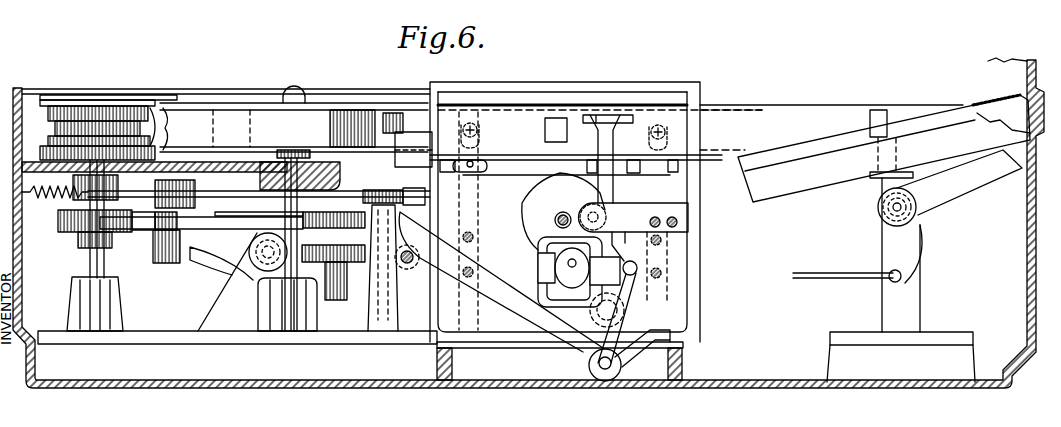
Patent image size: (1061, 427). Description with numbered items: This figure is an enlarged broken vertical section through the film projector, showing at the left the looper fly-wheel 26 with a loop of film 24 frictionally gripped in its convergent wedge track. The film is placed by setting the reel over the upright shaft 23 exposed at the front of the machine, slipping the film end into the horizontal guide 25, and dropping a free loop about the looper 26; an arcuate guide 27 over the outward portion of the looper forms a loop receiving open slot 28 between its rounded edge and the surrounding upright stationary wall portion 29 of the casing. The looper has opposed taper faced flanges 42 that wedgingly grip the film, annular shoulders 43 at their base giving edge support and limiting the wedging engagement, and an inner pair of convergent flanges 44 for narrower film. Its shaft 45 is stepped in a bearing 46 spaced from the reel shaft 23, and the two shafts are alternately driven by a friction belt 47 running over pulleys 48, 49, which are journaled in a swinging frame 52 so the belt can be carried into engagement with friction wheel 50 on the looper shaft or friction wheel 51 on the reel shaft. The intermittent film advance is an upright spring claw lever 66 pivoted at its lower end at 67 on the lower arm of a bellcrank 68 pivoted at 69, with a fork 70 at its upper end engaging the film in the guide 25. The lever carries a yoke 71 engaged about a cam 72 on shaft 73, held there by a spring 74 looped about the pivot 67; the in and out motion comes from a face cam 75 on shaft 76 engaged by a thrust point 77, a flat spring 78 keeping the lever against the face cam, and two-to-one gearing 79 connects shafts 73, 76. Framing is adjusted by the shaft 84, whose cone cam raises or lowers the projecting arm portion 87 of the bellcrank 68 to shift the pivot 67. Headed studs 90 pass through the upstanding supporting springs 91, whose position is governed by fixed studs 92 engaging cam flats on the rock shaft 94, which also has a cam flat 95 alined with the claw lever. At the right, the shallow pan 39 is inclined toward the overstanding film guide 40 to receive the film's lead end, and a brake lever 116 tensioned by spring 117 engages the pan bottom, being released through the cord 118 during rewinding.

The upright shaft 23 is at (293, 92).
The film 24 is at (48, 118).
The horizontal guide 25 is at (448, 104).
The looper fly-wheel 26 is at (112, 106).
The arcuate guide 27 is at (60, 95).
The loop receiving open slot 28 is at (26, 89).
The arcuate loop confining stationary wall portion 29 is at (14, 88).
The pan 39 is at (788, 187).
The film guide 40 is at (795, 110).
The taper faced flanges 42 is at (167, 121).
The annular shoulders 43 is at (155, 127).
The inner convergent film gripping flanges 44 is at (58, 124).
The shaft 45 is at (93, 258).
The bearing 46 is at (117, 308).
The friction belt 47 is at (239, 220).
The pulley 48 is at (143, 231).
The pulley 49 is at (357, 231).
The friction wheel 50 is at (60, 223).
The friction wheel 51 is at (270, 216).
The frame 52 is at (227, 271).
The spring lever 66 is at (614, 196).
The lever pivot 67 is at (613, 363).
The bellcrank 68 is at (503, 297).
The pivot 69 is at (632, 311).
The fork 70 is at (608, 118).
The yoke 71 is at (552, 299).
The cam 72 is at (582, 270).
The shaft 73 is at (542, 261).
The spring 74 is at (624, 285).
The face cam 75 is at (535, 222).
The shaft 76 is at (559, 215).
The thrust point 77 is at (589, 209).
The flat spring 78 is at (634, 217).
The two-to-one gearing 79 is at (605, 246).
The shaft 84 is at (407, 268).
The projecting arm portion 87 is at (407, 250).
The headed studs 90 is at (478, 128).
The upstanding supporting springs 91 is at (475, 224).
The fixed studs 92 is at (473, 168).
The rock shaft 94 is at (518, 162).
The cam flat 95 is at (592, 158).
The brake lever 116 is at (1015, 174).
The spring 117 is at (884, 208).
The cord 118 is at (833, 279).